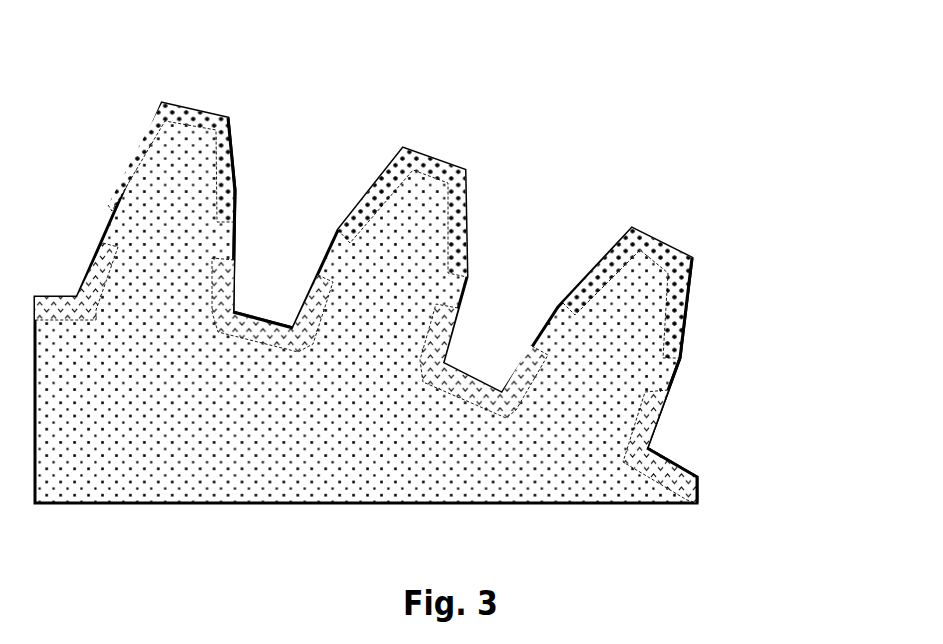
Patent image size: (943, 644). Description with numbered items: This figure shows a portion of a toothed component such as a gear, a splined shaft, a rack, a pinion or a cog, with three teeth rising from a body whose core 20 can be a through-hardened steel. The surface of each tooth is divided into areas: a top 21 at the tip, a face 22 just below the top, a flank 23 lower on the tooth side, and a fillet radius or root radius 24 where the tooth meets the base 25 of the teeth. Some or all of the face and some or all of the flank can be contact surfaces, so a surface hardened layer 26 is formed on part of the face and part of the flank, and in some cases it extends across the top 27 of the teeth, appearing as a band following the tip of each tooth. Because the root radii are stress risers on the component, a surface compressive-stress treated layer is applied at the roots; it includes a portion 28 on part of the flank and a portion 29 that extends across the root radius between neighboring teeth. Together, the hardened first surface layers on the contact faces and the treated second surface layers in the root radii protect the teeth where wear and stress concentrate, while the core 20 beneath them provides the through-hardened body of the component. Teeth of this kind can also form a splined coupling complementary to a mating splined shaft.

The core 20 is at (290, 460).
The top 21 is at (670, 245).
The face 22 is at (688, 315).
The flank 23 is at (668, 388).
The fillet radius or root radius 24 is at (653, 445).
The base 25 is at (682, 468).
The surface hardened layer 26 is at (233, 163).
The top 27 is at (182, 117).
The portion of surface compressive-stress treated layer 28 is at (233, 275).
The portion of surface compressive-stress treated layer 29 is at (232, 310).